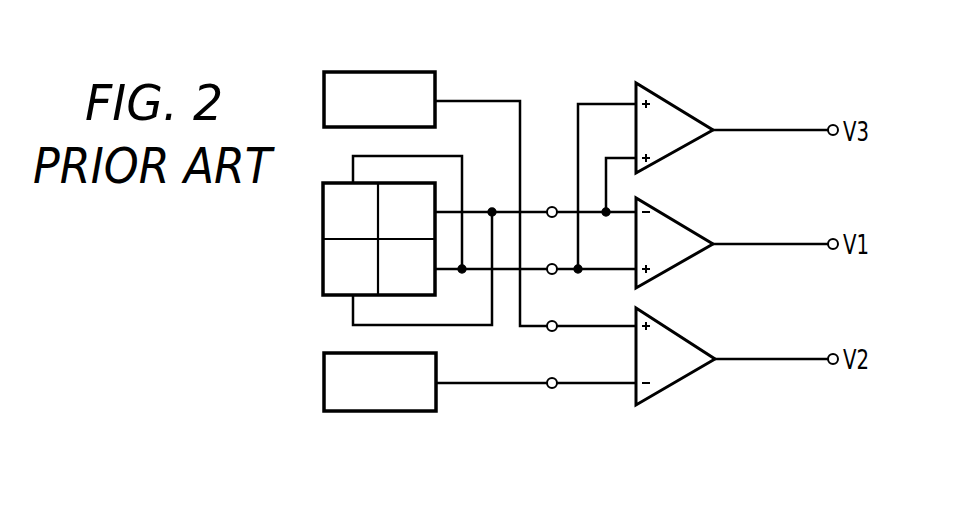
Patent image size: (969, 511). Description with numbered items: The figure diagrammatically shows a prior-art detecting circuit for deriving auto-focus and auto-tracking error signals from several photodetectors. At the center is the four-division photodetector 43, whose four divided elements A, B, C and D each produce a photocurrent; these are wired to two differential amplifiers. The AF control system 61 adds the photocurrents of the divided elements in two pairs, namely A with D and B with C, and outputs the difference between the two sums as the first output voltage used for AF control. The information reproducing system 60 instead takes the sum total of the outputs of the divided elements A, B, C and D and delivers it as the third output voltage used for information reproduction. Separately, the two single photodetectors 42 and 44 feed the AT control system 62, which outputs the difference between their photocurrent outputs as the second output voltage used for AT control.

The photodetector 42 is at (397, 72).
The four-division photodetector 43 is at (323, 220).
The photodetector 44 is at (381, 413).
The information reproducing system 60 is at (691, 114).
The AF control system 61 is at (693, 234).
The AT control system 62 is at (697, 349).